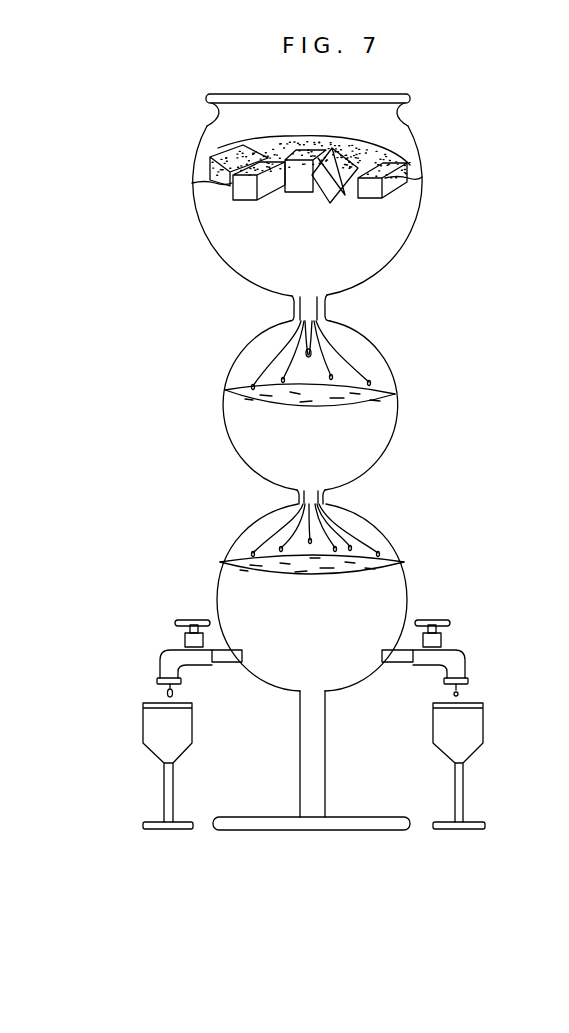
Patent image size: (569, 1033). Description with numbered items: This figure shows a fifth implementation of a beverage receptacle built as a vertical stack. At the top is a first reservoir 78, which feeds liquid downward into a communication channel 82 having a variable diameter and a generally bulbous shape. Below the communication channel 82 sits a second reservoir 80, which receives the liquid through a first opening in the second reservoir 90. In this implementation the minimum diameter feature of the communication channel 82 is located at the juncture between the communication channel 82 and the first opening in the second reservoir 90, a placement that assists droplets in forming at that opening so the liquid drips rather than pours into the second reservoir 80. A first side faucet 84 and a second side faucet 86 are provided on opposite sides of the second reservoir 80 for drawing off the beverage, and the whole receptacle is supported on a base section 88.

The first reservoir 78 is at (245, 246).
The communication channel 82 is at (263, 440).
The second reservoir 80 is at (286, 593).
The first opening in the second reservoir 90 is at (320, 512).
The first side faucet 84 is at (172, 661).
The second side faucet 86 is at (456, 650).
The base section 88 is at (315, 757).